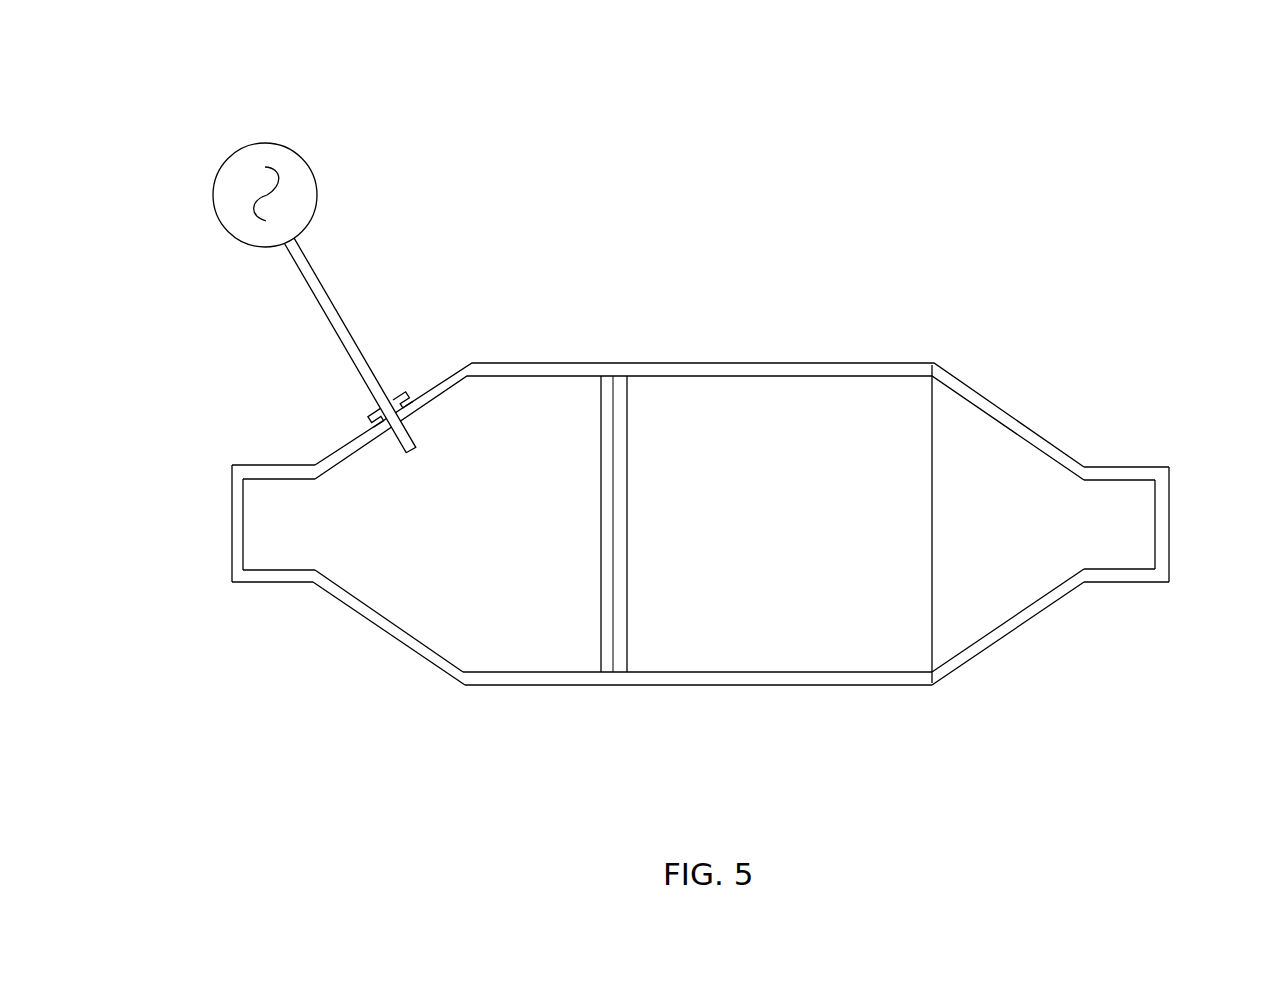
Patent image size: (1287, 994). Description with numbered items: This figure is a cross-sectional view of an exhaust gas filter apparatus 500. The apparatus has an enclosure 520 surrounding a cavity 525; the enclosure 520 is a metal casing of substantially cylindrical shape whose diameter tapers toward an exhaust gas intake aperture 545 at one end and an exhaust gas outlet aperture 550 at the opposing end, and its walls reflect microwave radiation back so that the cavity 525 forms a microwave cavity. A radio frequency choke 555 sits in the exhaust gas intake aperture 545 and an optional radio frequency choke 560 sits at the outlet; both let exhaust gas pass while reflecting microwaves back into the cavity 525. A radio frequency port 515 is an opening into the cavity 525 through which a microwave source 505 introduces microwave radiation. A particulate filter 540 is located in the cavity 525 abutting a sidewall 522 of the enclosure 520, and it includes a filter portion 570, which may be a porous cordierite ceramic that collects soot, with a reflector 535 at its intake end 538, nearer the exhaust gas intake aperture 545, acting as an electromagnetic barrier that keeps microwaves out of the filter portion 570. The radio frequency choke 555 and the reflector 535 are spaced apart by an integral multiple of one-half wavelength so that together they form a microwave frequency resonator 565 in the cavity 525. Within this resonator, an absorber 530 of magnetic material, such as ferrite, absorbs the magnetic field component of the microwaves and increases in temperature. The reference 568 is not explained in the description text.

The exhaust gas filter apparatus 500 is at (226, 90).
The microwave source 505 is at (297, 148).
The radio frequency port 515 is at (408, 367).
The enclosure 520 is at (471, 362).
The sidewall 522 is at (815, 371).
The cavity 525 is at (557, 407).
The absorber 530 is at (604, 382).
The reflector 535 is at (613, 390).
The intake end 538 is at (622, 386).
The particulate filter 540 is at (754, 375).
The exhaust gas intake aperture 545 is at (197, 517).
The exhaust gas outlet aperture 550 is at (1207, 517).
The radio frequency choke 555 is at (239, 543).
The radio frequency choke 560 is at (1162, 545).
The microwave frequency resonator 565 is at (463, 750).
The plate base 568 is at (626, 660).
The filter portion 570 is at (754, 672).